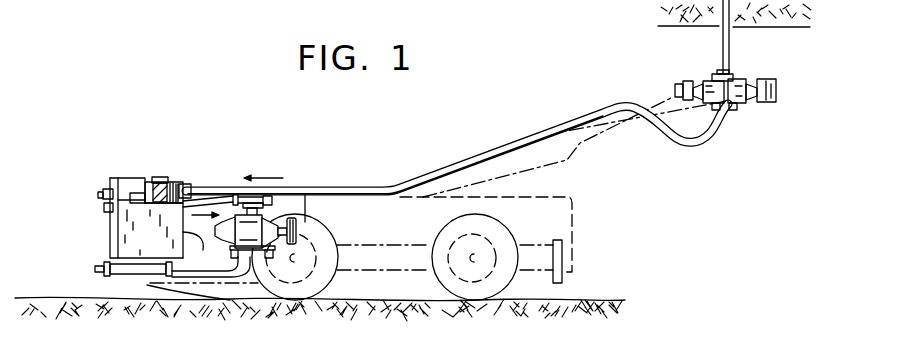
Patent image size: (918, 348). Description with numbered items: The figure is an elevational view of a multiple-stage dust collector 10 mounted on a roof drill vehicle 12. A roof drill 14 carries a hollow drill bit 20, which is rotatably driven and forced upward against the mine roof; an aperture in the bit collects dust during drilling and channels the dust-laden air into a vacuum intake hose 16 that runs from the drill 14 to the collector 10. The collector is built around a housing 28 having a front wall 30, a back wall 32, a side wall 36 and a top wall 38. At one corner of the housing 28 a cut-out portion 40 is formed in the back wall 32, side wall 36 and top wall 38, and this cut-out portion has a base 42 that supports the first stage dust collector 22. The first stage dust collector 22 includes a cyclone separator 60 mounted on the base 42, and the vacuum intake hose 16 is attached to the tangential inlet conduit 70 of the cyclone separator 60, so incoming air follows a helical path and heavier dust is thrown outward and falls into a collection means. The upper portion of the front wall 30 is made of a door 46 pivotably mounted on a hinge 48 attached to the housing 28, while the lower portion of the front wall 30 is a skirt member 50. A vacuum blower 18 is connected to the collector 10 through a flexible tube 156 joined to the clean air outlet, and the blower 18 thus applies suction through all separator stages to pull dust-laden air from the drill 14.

The multiple-stage dust collector 10 is at (107, 151).
The roof drill vehicle 12 is at (597, 241).
The roof drill 14 is at (680, 49).
The vacuum intake hose 16 is at (489, 143).
The vacuum blower 18 is at (306, 210).
The hollow drill bit 20 is at (730, 51).
The first stage dust collector 22 is at (163, 180).
The housing 28 is at (112, 244).
The front wall 30 is at (116, 225).
The back wall 32 is at (211, 254).
The side wall 36 is at (154, 247).
The top wall 38 is at (132, 178).
The cut-out portion 40 is at (175, 182).
The base 42 is at (156, 230).
The door 46 is at (106, 210).
The hinge 48 is at (108, 180).
The skirt member 50 is at (116, 249).
The cyclone separator 60 is at (153, 179).
The tangential inlet conduit 70 is at (182, 189).
The flexible tube 156 is at (224, 197).